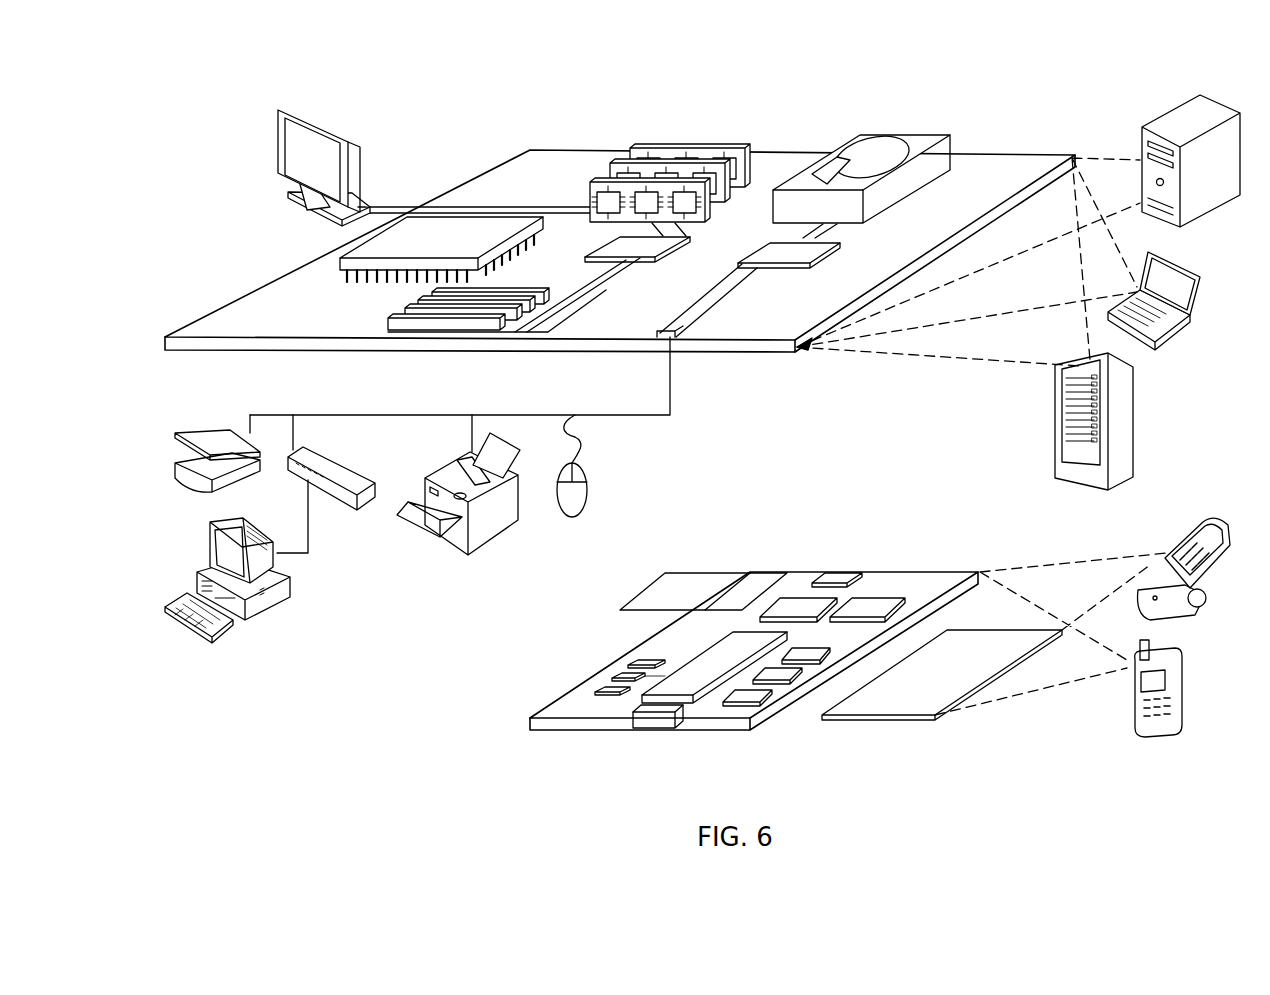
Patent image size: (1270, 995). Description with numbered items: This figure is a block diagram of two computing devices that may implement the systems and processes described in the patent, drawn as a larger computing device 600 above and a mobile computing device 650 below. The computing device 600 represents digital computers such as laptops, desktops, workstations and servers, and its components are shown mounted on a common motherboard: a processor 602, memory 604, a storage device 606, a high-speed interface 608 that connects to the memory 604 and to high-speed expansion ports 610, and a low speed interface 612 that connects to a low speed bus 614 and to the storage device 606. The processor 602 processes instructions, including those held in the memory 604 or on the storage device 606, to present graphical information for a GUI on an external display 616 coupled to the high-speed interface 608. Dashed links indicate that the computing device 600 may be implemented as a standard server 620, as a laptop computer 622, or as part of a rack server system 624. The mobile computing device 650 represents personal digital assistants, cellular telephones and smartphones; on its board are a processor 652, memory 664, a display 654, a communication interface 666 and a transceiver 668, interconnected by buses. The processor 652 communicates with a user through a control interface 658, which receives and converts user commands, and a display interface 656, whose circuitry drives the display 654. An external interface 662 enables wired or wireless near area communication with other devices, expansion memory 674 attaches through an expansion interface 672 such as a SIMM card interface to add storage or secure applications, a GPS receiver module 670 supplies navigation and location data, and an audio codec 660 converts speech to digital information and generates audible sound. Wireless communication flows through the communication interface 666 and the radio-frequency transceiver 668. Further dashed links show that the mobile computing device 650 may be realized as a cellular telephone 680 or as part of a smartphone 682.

The computing device 600 is at (457, 128).
The processor 602 is at (340, 260).
The memory 604 is at (640, 150).
The storage device 606 is at (862, 134).
The high-speed interface 608 is at (600, 245).
The high-speed expansion ports 610 is at (400, 318).
The low speed interface 612 is at (766, 250).
The low speed bus 614 is at (673, 338).
The display 616 is at (279, 108).
The standard server 620 is at (1142, 140).
The laptop computer 622 is at (1198, 273).
The rack server system 624 is at (1057, 445).
The mobile computing device 650 is at (506, 724).
The processor 652 is at (688, 687).
The display 654 is at (905, 702).
The display interface 656 is at (753, 717).
The control interface 658 is at (785, 690).
The audio codec 660 is at (812, 660).
The external interface 662 is at (667, 717).
The memory 664 is at (610, 680).
The communication interface 666 is at (800, 603).
The transceiver 668 is at (870, 602).
The GPS receiver module 670 is at (843, 575).
The expansion interface 672 is at (735, 585).
The expansion memory 674 is at (667, 583).
The cellular telephone 680 is at (1185, 528).
The smartphone 682 is at (1127, 697).